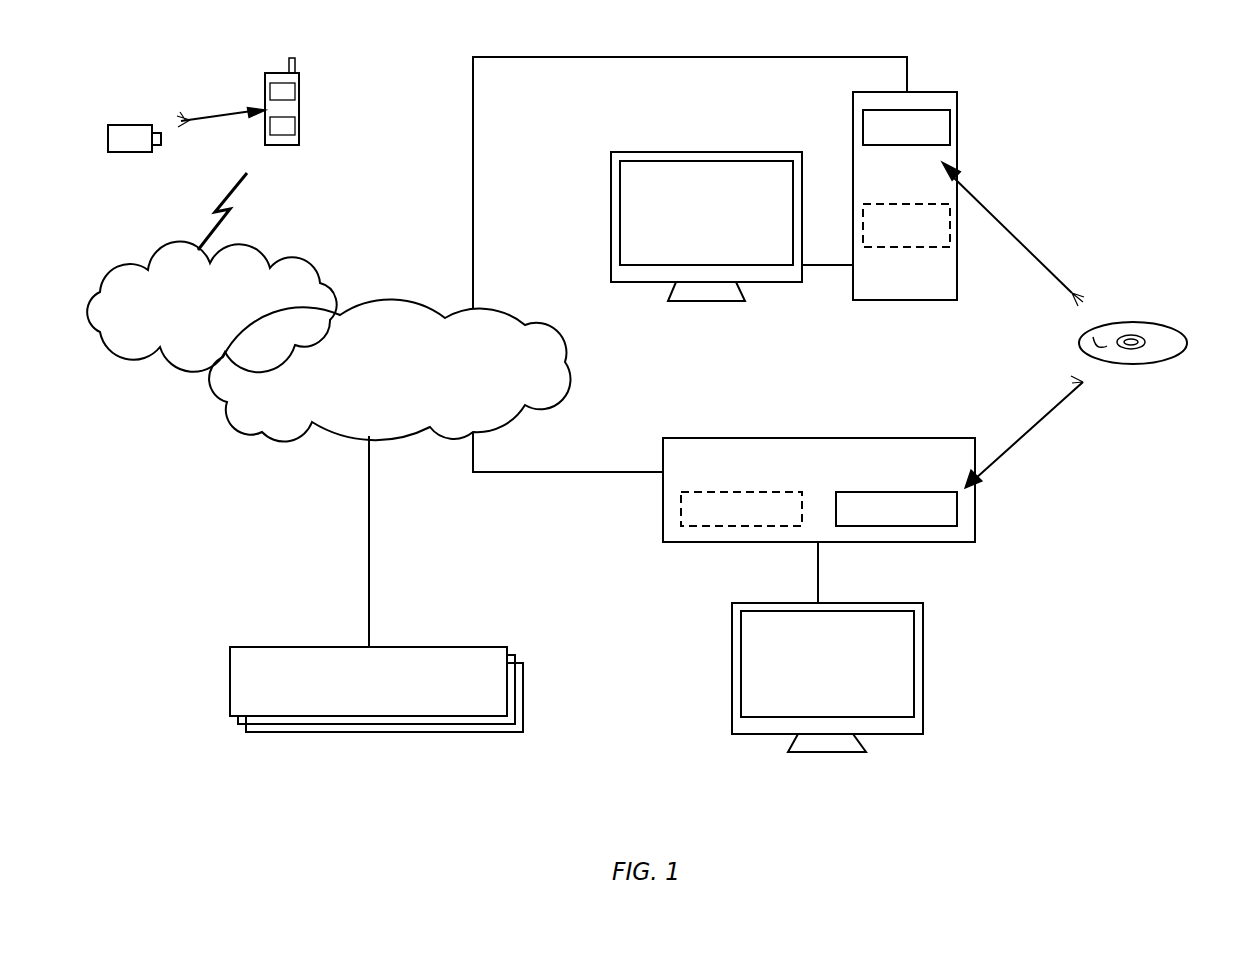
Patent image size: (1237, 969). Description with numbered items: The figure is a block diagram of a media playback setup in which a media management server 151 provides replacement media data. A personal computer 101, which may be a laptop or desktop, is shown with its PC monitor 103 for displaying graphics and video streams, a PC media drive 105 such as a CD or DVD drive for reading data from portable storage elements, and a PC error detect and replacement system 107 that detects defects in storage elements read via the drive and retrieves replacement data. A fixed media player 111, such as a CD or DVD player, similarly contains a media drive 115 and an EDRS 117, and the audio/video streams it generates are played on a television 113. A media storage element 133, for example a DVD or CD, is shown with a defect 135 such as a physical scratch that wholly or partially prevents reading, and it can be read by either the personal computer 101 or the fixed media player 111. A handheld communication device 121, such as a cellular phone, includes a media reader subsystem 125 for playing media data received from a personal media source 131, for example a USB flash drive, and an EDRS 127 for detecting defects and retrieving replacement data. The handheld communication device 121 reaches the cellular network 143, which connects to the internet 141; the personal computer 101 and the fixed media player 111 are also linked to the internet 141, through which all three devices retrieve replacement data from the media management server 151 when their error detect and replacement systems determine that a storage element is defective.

The personal computer 101 is at (942, 92).
The PC monitor 103 is at (630, 151).
The PC media drive 105 is at (890, 136).
The PC error detect & replacement system 107 is at (890, 236).
The fixed media player 111 is at (960, 438).
The television 113 is at (752, 603).
The media drive 115 is at (881, 522).
The EDRS 117 is at (725, 522).
The handheld communication device 121 is at (283, 146).
The media reader subsystem 125 is at (279, 83).
The EDRS 127 is at (298, 125).
The personal media source 131 is at (112, 125).
The media storage element 133 is at (1172, 326).
The defect 135 is at (1094, 347).
The internet 141 is at (440, 378).
The cellular network 143 is at (290, 317).
The media management server 151 is at (478, 647).